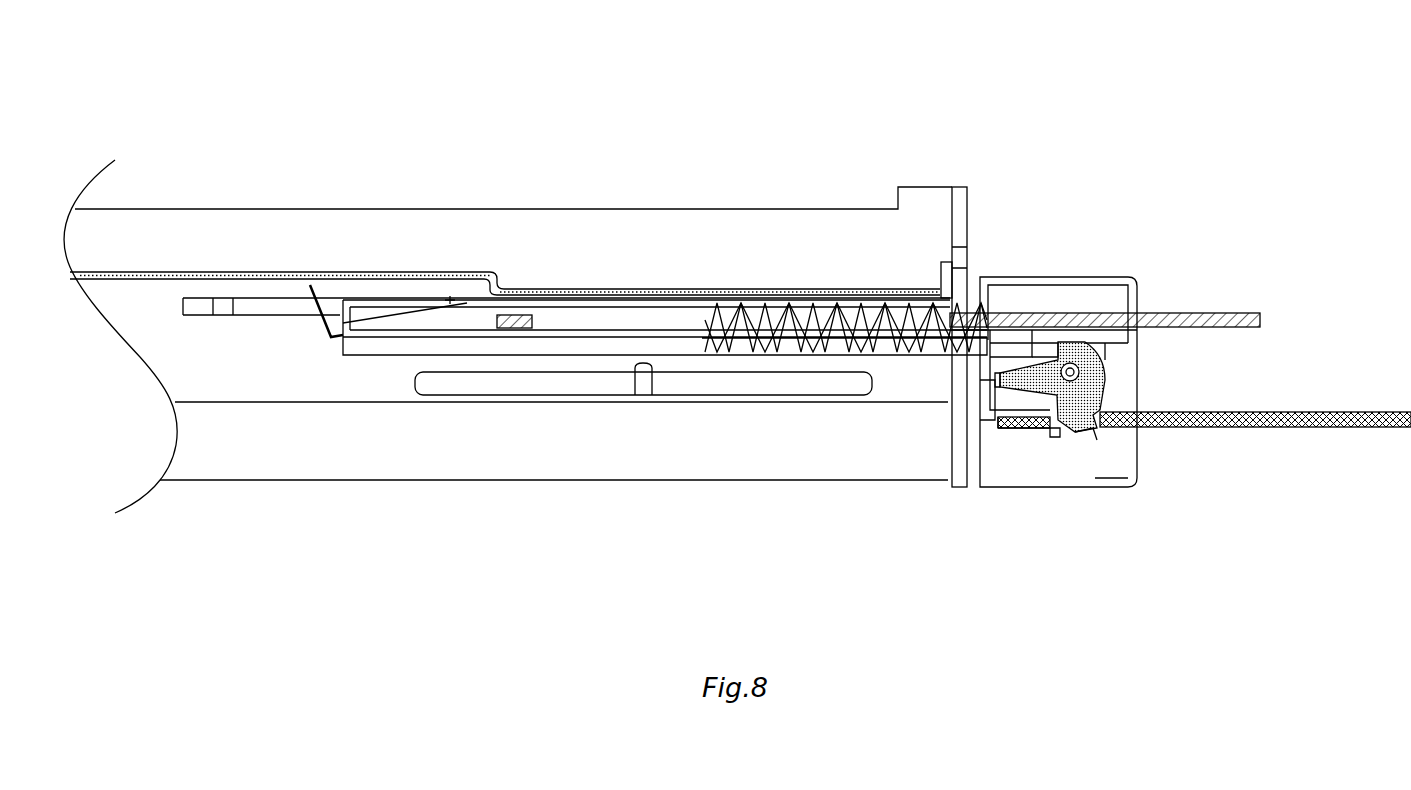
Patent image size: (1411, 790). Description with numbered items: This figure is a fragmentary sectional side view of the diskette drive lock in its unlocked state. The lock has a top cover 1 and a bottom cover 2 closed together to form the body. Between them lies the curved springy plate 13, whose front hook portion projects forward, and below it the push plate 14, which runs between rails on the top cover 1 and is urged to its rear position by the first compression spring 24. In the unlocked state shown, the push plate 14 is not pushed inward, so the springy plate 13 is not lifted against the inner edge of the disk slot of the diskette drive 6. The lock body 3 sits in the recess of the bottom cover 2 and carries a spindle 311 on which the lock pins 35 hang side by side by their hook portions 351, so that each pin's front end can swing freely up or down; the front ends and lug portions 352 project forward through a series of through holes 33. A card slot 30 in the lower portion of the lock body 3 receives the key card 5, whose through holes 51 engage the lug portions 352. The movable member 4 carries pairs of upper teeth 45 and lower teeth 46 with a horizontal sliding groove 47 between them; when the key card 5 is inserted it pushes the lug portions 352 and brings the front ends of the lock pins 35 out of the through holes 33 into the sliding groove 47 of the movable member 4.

The top cover 1 is at (1133, 283).
The bottom cover 2 is at (1087, 440).
The lock body 3 is at (1125, 400).
The movable member 4 is at (973, 312).
The key card 5 is at (1300, 426).
The diskette drive 6 is at (473, 270).
The curved springy plate 13 is at (337, 277).
The push plate 14 is at (495, 325).
The first compression spring 24 is at (745, 340).
The card slot 30 is at (1127, 427).
The through holes 33 is at (1033, 337).
The lock pins 35 is at (1003, 430).
The upper teeth 45 is at (998, 312).
The lower teeth 46 is at (982, 400).
The sliding groove 47 is at (995, 378).
The through holes 51 is at (1057, 437).
The spindle 311 is at (1110, 372).
The hook portion 351 is at (1073, 337).
The lug portion 352 is at (1097, 478).